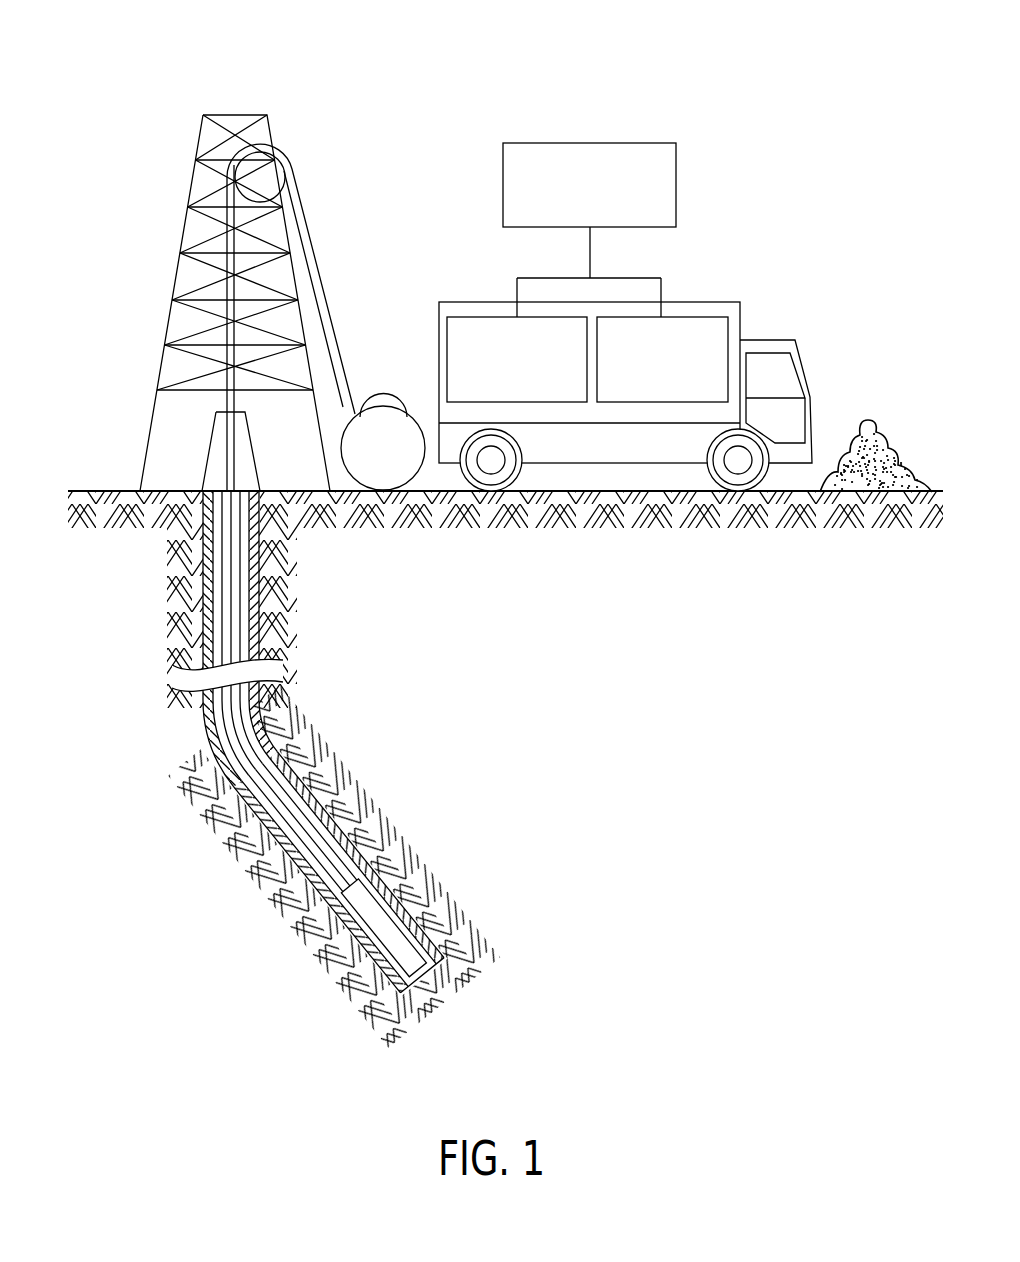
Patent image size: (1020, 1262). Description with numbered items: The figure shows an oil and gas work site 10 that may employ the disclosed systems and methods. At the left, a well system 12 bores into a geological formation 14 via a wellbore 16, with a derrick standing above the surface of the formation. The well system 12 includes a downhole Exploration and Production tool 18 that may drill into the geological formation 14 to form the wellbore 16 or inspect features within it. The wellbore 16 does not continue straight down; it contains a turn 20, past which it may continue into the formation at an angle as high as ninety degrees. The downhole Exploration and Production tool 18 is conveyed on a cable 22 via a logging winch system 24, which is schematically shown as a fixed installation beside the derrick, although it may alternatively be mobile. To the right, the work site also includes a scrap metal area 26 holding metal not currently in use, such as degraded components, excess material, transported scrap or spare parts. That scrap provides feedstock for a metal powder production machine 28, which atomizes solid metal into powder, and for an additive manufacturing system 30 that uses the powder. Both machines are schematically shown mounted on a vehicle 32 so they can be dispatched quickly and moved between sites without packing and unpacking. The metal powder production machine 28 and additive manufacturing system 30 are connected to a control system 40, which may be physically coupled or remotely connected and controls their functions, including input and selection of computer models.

The oil and gas work site 10 is at (227, 57).
The well system 12 is at (165, 175).
The geological formation 14 is at (117, 491).
The wellbore 16 is at (207, 647).
The downhole Exploration and Production tool 18 is at (347, 897).
The turn 20 is at (282, 755).
The cable 22 is at (335, 235).
The logging winch system 24 is at (425, 473).
The scrap metal area 26 is at (890, 430).
The metal powder production machine 28 is at (703, 316).
The additive manufacturing system 30 is at (468, 316).
The vehicle 32 is at (643, 477).
The control system 40 is at (677, 180).